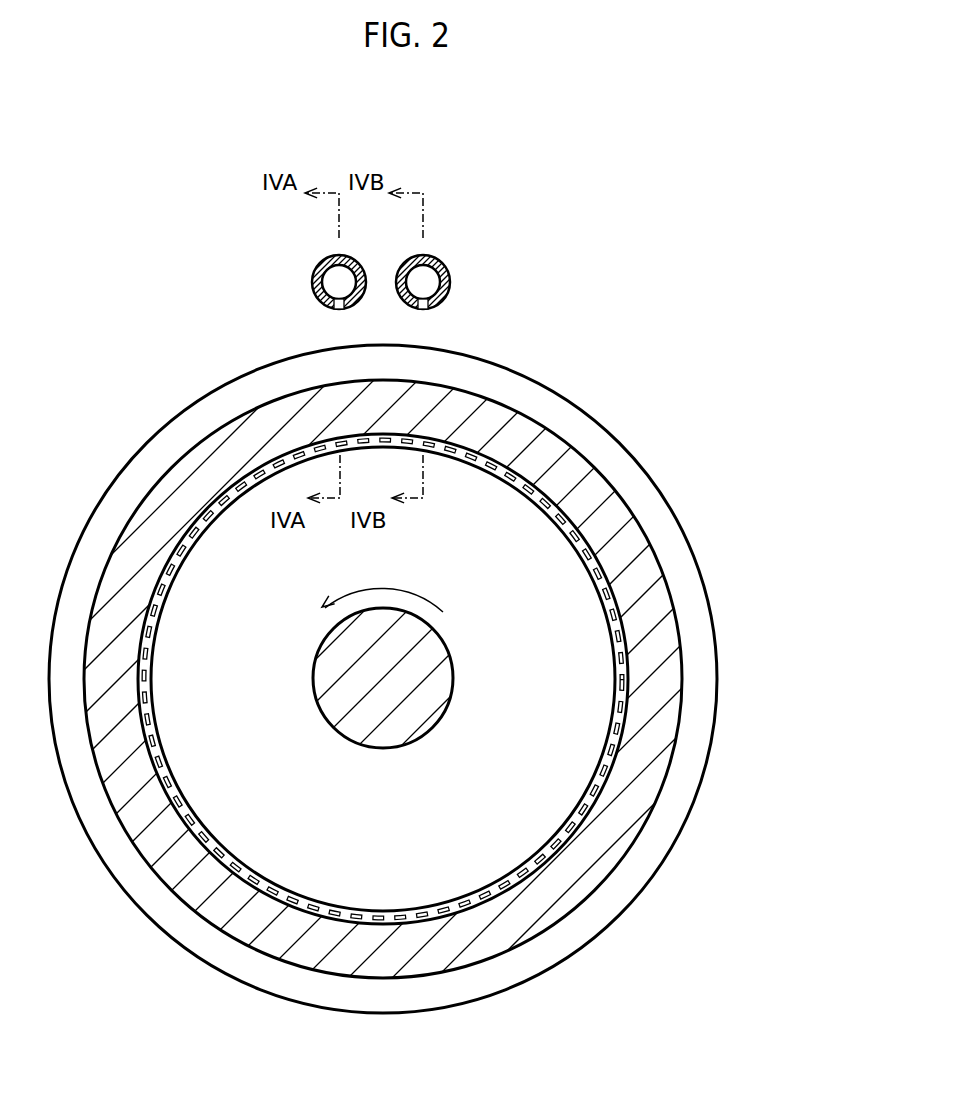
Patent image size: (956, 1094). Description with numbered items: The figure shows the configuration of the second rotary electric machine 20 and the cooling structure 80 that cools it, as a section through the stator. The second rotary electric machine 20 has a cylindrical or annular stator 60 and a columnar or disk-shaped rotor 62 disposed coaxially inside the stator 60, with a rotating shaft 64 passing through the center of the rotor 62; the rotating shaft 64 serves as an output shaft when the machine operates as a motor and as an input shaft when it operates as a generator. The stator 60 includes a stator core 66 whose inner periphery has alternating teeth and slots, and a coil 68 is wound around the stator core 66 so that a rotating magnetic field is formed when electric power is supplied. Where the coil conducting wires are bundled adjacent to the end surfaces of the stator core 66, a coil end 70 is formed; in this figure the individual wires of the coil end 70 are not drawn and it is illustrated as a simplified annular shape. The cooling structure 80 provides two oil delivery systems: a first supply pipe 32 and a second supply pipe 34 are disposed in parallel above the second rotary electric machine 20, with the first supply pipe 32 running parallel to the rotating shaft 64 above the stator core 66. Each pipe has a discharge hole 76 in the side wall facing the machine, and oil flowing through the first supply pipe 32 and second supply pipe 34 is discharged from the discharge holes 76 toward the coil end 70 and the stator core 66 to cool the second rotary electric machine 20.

The second rotary electric machine 20 is at (148, 333).
The first supply pipe 32 is at (320, 263).
The second supply pipe 34 is at (450, 279).
The stator 60 is at (697, 548).
The rotor 62 is at (567, 672).
The rotating shaft 64 is at (432, 693).
The stator core 66 is at (702, 735).
The coil 68 is at (647, 828).
The coil end 70 is at (590, 862).
The discharge hole 76 is at (338, 307).
The cooling structure 80 is at (240, 160).